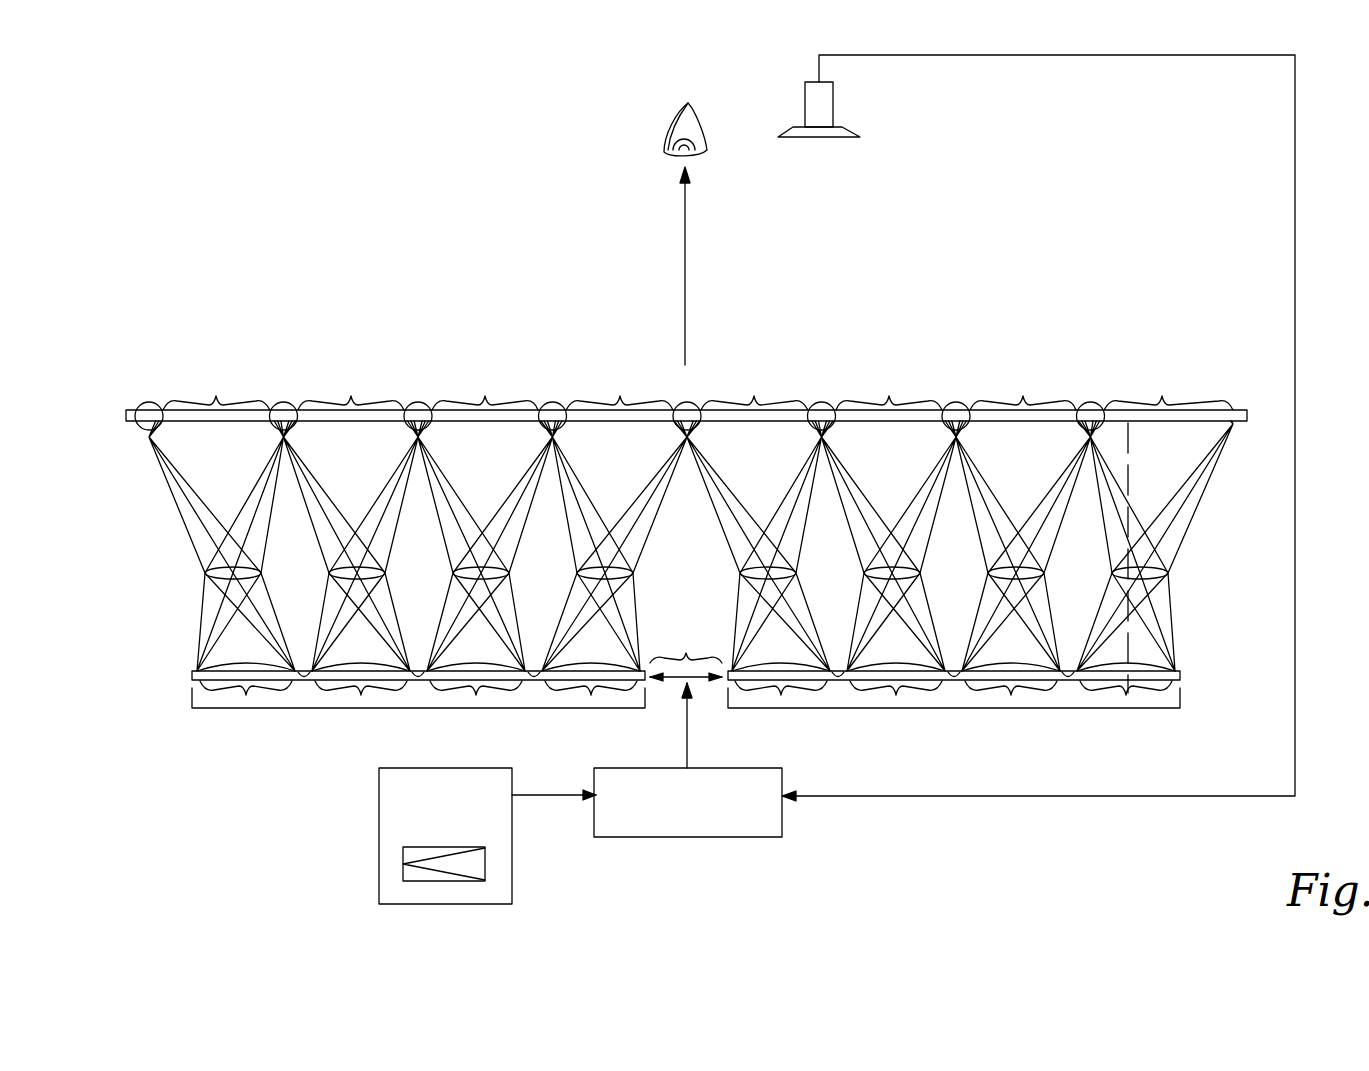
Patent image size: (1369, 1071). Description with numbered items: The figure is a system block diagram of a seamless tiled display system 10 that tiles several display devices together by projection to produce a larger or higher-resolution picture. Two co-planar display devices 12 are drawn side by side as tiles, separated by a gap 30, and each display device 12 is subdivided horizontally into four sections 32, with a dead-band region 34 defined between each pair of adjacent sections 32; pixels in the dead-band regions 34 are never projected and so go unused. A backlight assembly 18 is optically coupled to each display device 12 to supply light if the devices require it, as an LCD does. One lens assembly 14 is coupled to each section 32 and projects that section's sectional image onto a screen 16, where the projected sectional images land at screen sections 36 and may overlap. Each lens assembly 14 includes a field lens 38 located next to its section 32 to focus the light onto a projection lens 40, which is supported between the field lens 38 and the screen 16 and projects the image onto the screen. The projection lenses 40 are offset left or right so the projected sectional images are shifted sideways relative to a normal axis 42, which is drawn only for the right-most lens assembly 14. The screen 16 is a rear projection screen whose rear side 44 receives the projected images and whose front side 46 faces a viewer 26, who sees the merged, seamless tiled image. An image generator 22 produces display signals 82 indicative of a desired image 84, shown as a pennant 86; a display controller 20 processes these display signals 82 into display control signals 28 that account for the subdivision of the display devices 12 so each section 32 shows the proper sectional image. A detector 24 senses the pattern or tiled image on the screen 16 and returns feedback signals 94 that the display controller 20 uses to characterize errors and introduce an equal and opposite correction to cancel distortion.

The seamless tiled display system 10 is at (137, 182).
The display device 12 is at (192, 675).
The lens assembly 14 is at (206, 571).
The screen 16 is at (1247, 410).
The backlight assembly 18 is at (194, 710).
The display controller 20 is at (784, 772).
The image generator 22 is at (380, 783).
The detector 24 is at (831, 100).
The viewer 26 is at (690, 127).
The display control signals 28 is at (689, 727).
The gap 30 is at (686, 653).
The section 32 is at (246, 697).
The dead-band region 34 is at (303, 683).
The screen section 36 is at (684, 397).
The field lens 38 is at (236, 664).
The projection lens 40 is at (261, 573).
The normal axis 42 is at (1131, 437).
The rear side 44 is at (147, 441).
The front side 46 is at (153, 404).
The display signals 82 is at (547, 793).
The image 84 is at (440, 882).
The pennant 86 is at (478, 866).
The feedback signals 94 is at (1295, 150).